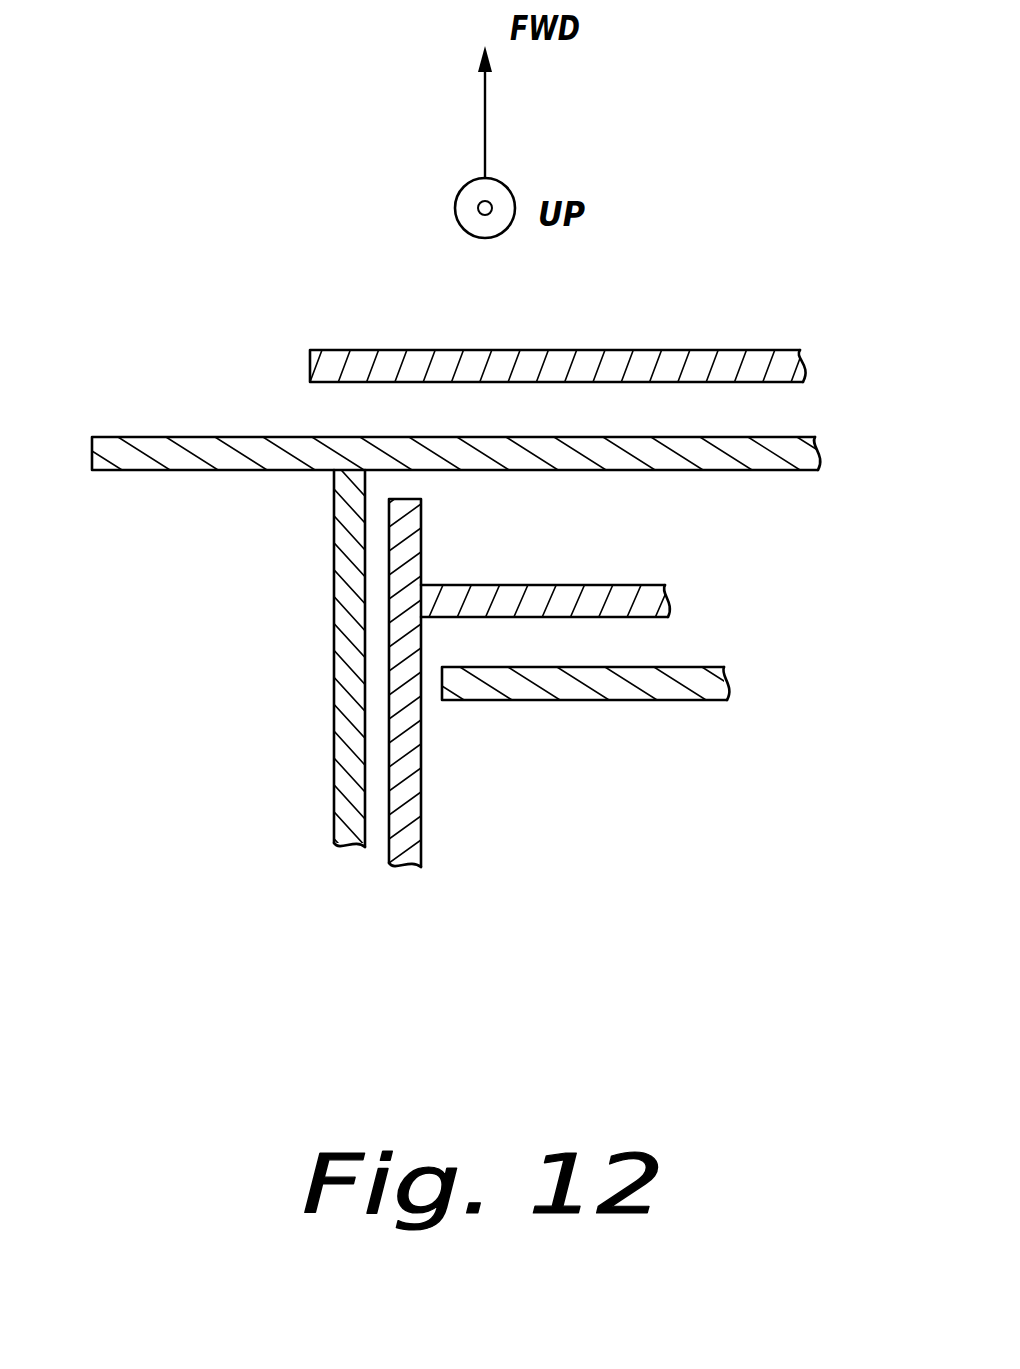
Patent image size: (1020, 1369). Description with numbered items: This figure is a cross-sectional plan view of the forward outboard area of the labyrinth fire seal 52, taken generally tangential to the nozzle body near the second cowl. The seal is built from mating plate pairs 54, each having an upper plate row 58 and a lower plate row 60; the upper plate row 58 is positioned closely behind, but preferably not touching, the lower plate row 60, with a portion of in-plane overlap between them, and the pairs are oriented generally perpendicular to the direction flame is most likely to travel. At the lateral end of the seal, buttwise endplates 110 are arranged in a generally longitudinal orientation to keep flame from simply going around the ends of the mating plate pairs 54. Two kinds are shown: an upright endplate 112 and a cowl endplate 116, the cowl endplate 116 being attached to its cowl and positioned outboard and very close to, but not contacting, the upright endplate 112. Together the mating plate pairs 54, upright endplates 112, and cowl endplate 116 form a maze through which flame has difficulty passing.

The labyrinth fire seal 52 is at (166, 664).
The mating plate pair 54 is at (837, 340).
The upper plate row 58 is at (128, 432).
The lower plate row 60 is at (363, 346).
The endplates 110 is at (448, 880).
The upright endplates 112 is at (421, 760).
The cowl endplates 116 is at (334, 722).